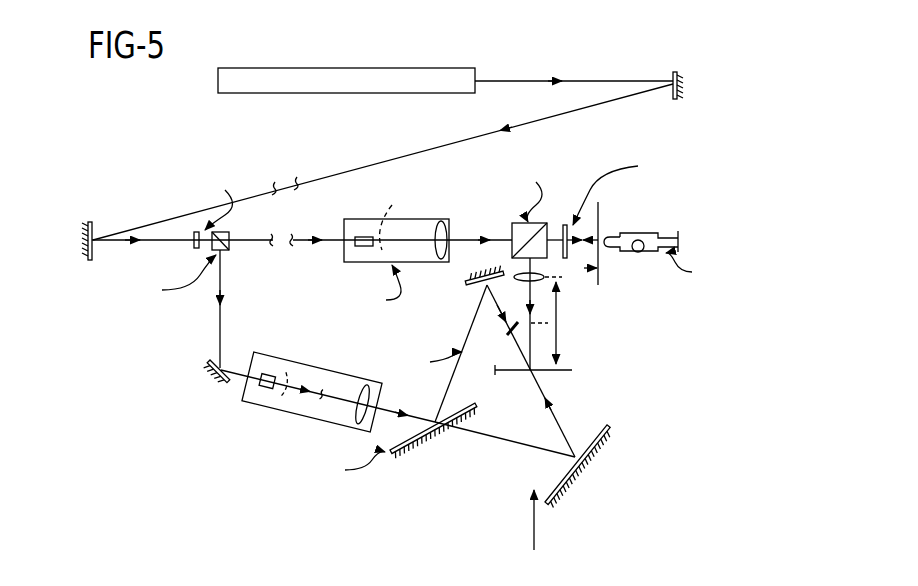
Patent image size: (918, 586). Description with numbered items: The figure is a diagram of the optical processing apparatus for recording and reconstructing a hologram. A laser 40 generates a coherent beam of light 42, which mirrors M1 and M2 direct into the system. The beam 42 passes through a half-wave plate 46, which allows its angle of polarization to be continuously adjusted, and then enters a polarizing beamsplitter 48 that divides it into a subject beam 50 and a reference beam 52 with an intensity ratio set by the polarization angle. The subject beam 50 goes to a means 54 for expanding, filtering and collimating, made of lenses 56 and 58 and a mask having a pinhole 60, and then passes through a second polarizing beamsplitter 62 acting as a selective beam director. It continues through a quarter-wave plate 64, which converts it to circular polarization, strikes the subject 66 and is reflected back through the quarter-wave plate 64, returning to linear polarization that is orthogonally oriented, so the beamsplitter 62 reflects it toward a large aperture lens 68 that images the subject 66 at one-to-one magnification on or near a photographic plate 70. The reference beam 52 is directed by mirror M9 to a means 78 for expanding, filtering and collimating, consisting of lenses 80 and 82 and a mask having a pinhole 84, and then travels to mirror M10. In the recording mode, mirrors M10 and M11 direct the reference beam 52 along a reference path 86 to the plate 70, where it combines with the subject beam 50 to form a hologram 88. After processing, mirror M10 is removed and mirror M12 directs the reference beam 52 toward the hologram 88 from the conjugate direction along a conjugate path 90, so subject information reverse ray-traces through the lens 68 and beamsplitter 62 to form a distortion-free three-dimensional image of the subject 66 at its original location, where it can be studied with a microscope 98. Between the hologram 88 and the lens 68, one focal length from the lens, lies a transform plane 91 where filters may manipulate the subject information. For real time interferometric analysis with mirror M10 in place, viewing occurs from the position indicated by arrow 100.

The laser 40 is at (408, 68).
The mirror M1 is at (673, 75).
The coherent beam of light 42 is at (362, 168).
The mirror M2 is at (100, 192).
The half-wave plate 46 is at (194, 246).
The polarizing beamsplitter 48 is at (229, 250).
The subject beam 50 is at (268, 246).
The reference beam 52 is at (221, 335).
The means for expanding, filtering and collimating 54 is at (367, 237).
The lens 56 is at (411, 244).
The lens 58 is at (441, 221).
The pinhole 60 is at (390, 232).
The second polarizing beamsplitter 62 is at (512, 233).
The quarter-wave plate 64 is at (567, 232).
The subject 66 is at (598, 282).
The large aperture lens 68 is at (517, 283).
The photographic plate 70 is at (563, 368).
The means for expanding, filtering and collimating 78 is at (300, 389).
The lens 80 is at (267, 381).
The lens 82 is at (362, 404).
The pinhole 84 is at (285, 385).
The reference path 86 is at (479, 305).
The hologram 88 is at (572, 370).
The conjugate path 90 is at (548, 398).
The transform plane 91 is at (508, 335).
The microscope 98 is at (655, 233).
The arrow 100 is at (534, 533).
The mirror M9 is at (212, 375).
The mirror M10 is at (413, 450).
The mirror M11 is at (470, 281).
The mirror M12 is at (590, 470).